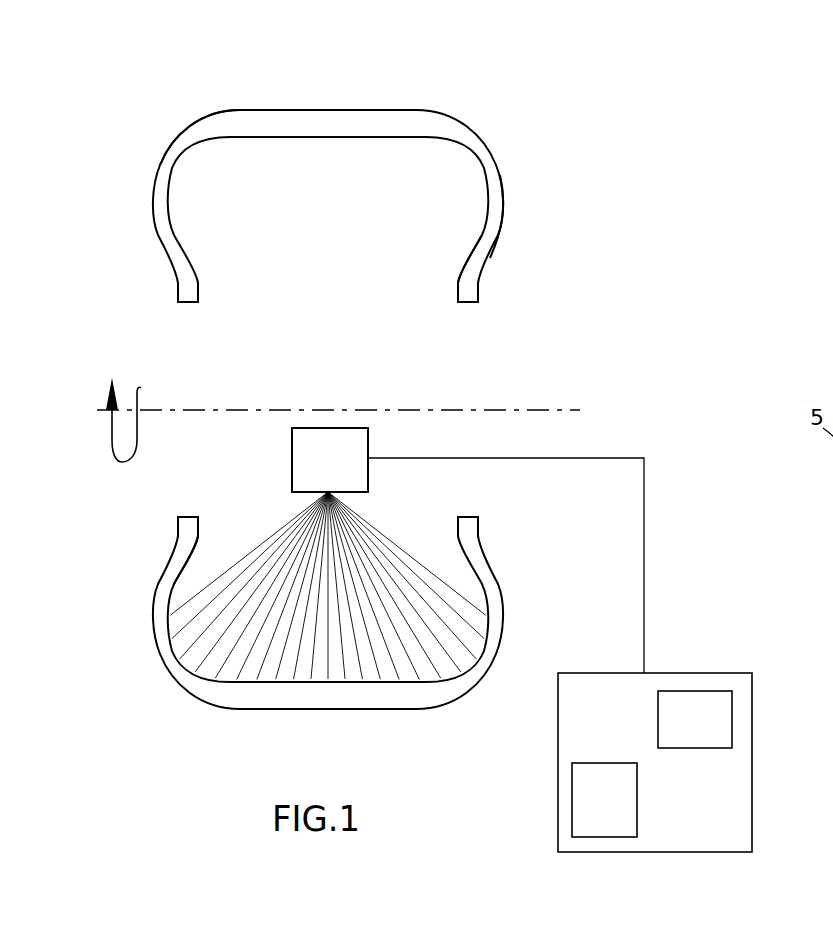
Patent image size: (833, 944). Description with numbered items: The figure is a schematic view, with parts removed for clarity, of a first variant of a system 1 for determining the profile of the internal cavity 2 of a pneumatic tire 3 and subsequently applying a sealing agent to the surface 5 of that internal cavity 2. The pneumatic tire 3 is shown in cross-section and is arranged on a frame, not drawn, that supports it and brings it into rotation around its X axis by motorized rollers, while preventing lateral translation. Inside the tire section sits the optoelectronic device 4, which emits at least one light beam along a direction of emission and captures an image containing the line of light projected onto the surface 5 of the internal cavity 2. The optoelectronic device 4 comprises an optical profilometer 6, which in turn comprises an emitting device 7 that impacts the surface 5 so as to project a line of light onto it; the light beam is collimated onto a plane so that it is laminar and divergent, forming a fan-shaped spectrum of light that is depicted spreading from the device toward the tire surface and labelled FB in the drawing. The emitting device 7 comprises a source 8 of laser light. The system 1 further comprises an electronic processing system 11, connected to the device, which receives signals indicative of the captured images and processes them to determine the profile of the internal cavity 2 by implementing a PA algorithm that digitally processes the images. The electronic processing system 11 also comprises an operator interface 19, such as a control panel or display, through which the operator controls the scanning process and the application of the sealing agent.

The system 1 is at (524, 132).
The internal cavity 2 is at (338, 168).
The pneumatic tire 3 is at (183, 145).
The optoelectronic device 4 is at (391, 441).
The surface 5 is at (480, 219).
The optical profilometer 6 is at (267, 443).
The emitting device 7 is at (328, 440).
The source of laser light 8 is at (330, 460).
The electronic processing system 11 is at (776, 772).
The operator interface 19 is at (695, 719).
The PA algorithm PA is at (604, 800).
The fan beam FB is at (383, 534).
The X axis X is at (505, 410).